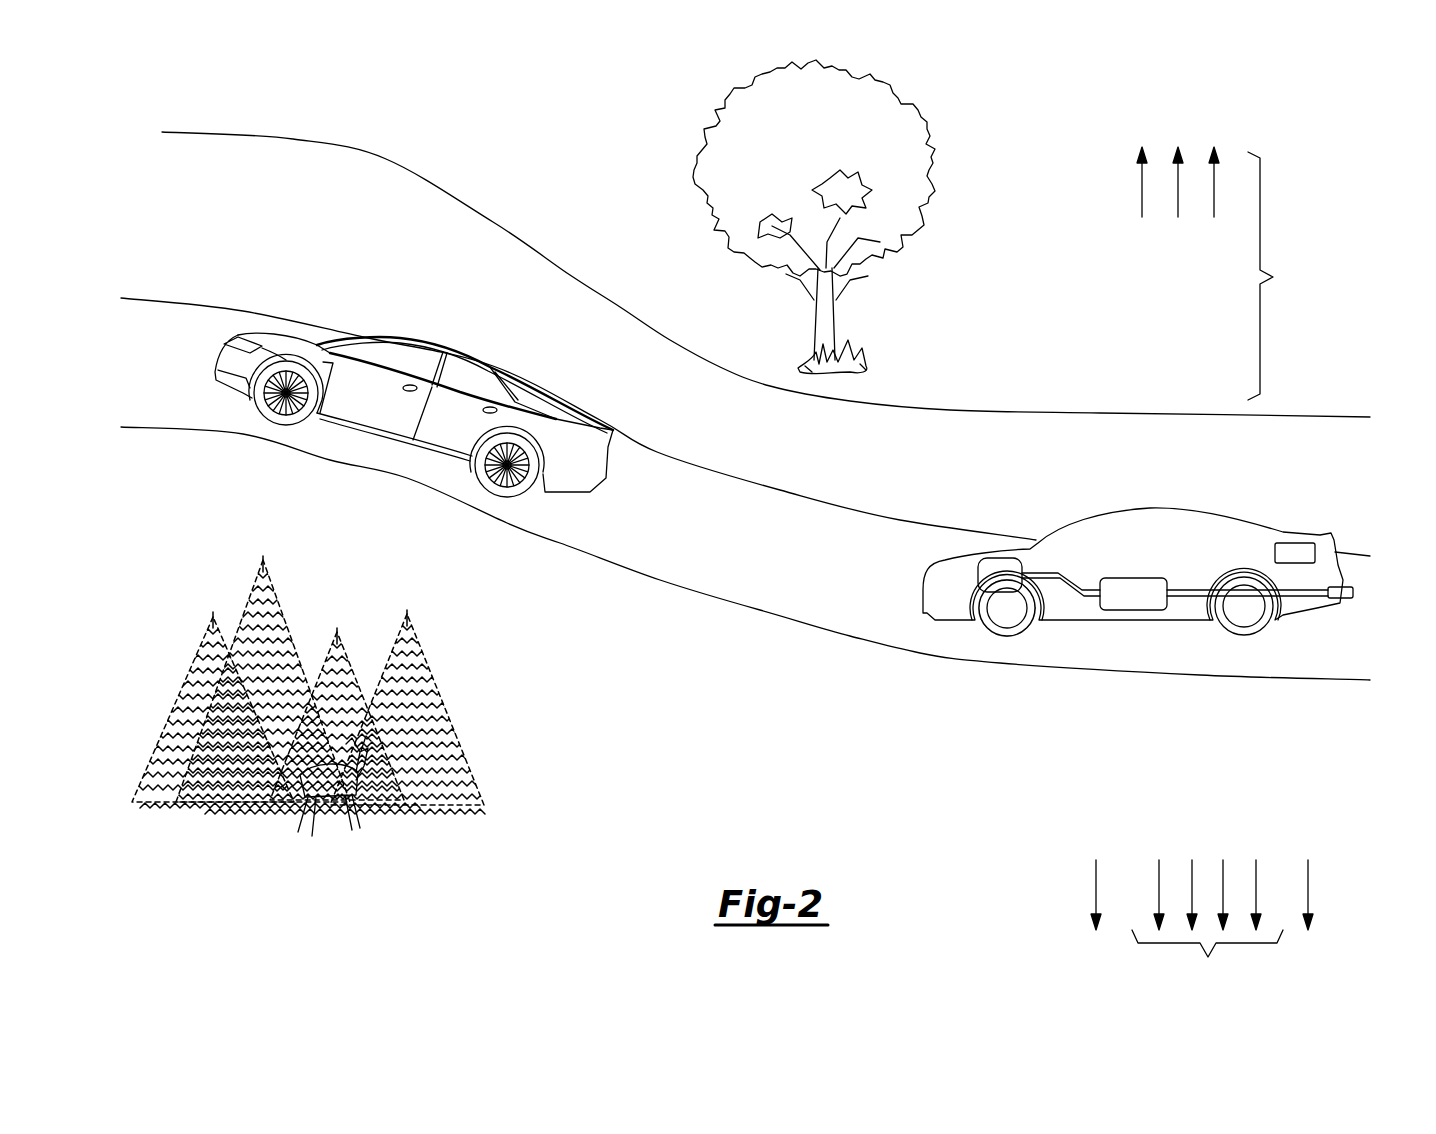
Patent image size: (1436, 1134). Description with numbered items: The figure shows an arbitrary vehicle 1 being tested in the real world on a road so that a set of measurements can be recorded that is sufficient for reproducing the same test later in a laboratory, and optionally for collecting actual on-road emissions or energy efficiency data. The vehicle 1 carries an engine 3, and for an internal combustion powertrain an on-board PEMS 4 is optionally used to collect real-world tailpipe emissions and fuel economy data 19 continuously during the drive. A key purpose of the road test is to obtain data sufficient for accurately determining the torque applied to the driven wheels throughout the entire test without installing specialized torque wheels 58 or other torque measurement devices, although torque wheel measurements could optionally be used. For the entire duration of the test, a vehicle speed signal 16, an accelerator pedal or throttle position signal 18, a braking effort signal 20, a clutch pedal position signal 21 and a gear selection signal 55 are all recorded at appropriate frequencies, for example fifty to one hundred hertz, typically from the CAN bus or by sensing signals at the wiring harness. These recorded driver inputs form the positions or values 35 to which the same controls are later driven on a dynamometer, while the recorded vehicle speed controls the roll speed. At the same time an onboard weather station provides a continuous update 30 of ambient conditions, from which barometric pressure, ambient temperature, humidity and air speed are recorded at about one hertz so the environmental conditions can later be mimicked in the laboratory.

The vehicle 1 is at (1209, 510).
The engine 3 is at (1001, 558).
The PEMS 4 is at (1297, 543).
The torque wheels 58 is at (1005, 637).
The continuous update of ambient atmospheric conditions 30 is at (1219, 273).
The positions or values 35 is at (1207, 961).
The emissions and fuel economy data 19 is at (1103, 722).
The gear selection signal 55 is at (1166, 729).
The accelerator pedal position or throttle position signal 18 is at (1199, 745).
The clutch pedal position signal 21 is at (1230, 724).
The braking effort signal 20 is at (1263, 746).
The vehicle speed signal 16 is at (1315, 724).